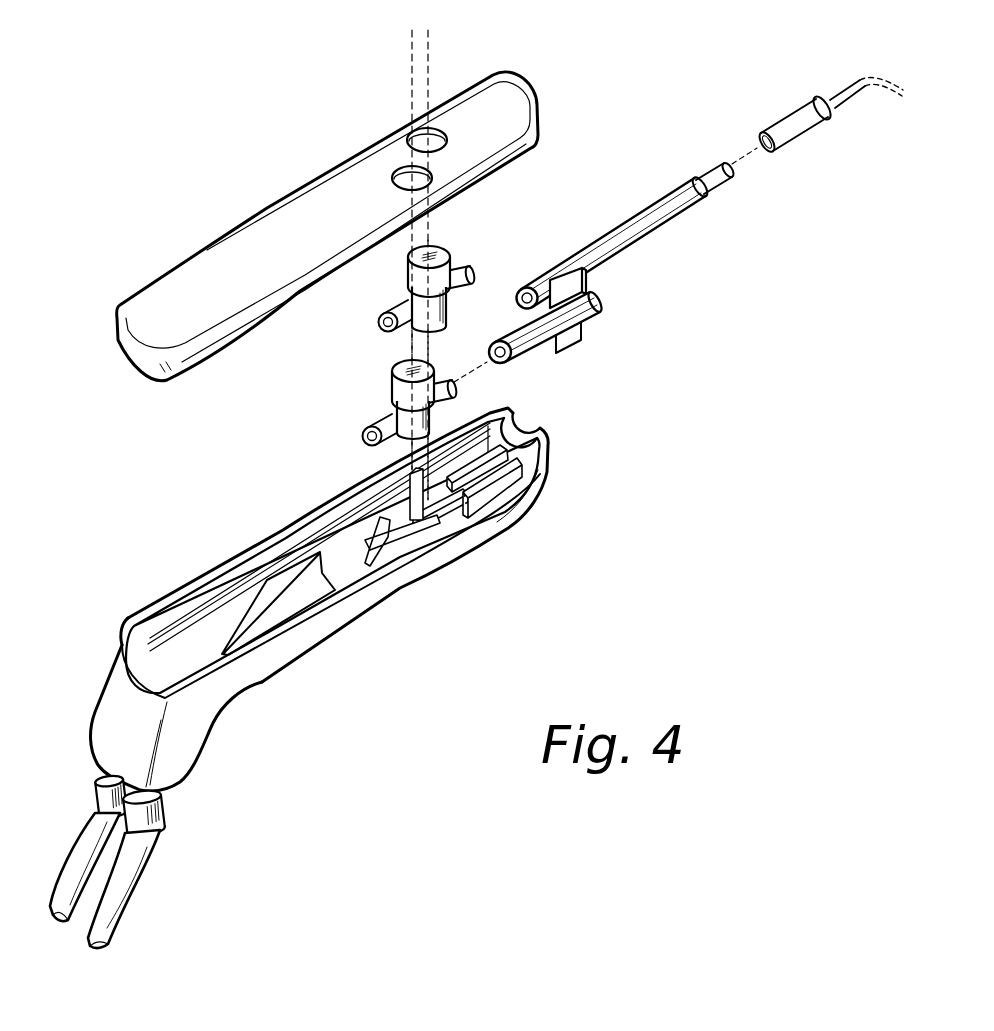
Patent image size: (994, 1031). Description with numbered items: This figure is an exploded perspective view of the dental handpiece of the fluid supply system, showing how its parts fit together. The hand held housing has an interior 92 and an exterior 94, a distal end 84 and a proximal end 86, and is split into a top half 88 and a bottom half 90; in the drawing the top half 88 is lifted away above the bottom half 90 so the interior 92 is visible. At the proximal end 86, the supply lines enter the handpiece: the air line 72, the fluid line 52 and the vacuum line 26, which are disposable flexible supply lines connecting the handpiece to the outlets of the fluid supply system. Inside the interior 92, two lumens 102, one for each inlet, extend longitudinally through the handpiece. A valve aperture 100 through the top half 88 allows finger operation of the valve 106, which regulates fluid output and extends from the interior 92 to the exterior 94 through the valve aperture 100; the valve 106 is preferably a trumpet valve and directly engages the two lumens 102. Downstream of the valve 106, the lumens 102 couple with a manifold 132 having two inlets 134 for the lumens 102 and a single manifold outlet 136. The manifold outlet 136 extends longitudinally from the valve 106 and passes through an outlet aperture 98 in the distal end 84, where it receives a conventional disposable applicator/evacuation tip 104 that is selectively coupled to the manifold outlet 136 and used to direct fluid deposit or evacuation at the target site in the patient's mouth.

The vacuum line 26 is at (62, 922).
The fluid line 52 is at (108, 861).
The air line 72 is at (155, 892).
The distal end 84 is at (377, 585).
The proximal end 86 is at (117, 725).
The top half 88 is at (327, 219).
The bottom half 90 is at (277, 655).
The interior 92 is at (205, 633).
The exterior 94 is at (333, 147).
The outlet aperture 98 is at (527, 428).
The valve aperture 100 is at (393, 178).
The lumens 102 is at (367, 427).
The disposable applicator/evacuation tip 104 is at (788, 115).
The valve 106 is at (440, 370).
The manifold 132 is at (637, 247).
The inlets 134 is at (522, 357).
The manifold outlet 136 is at (713, 188).